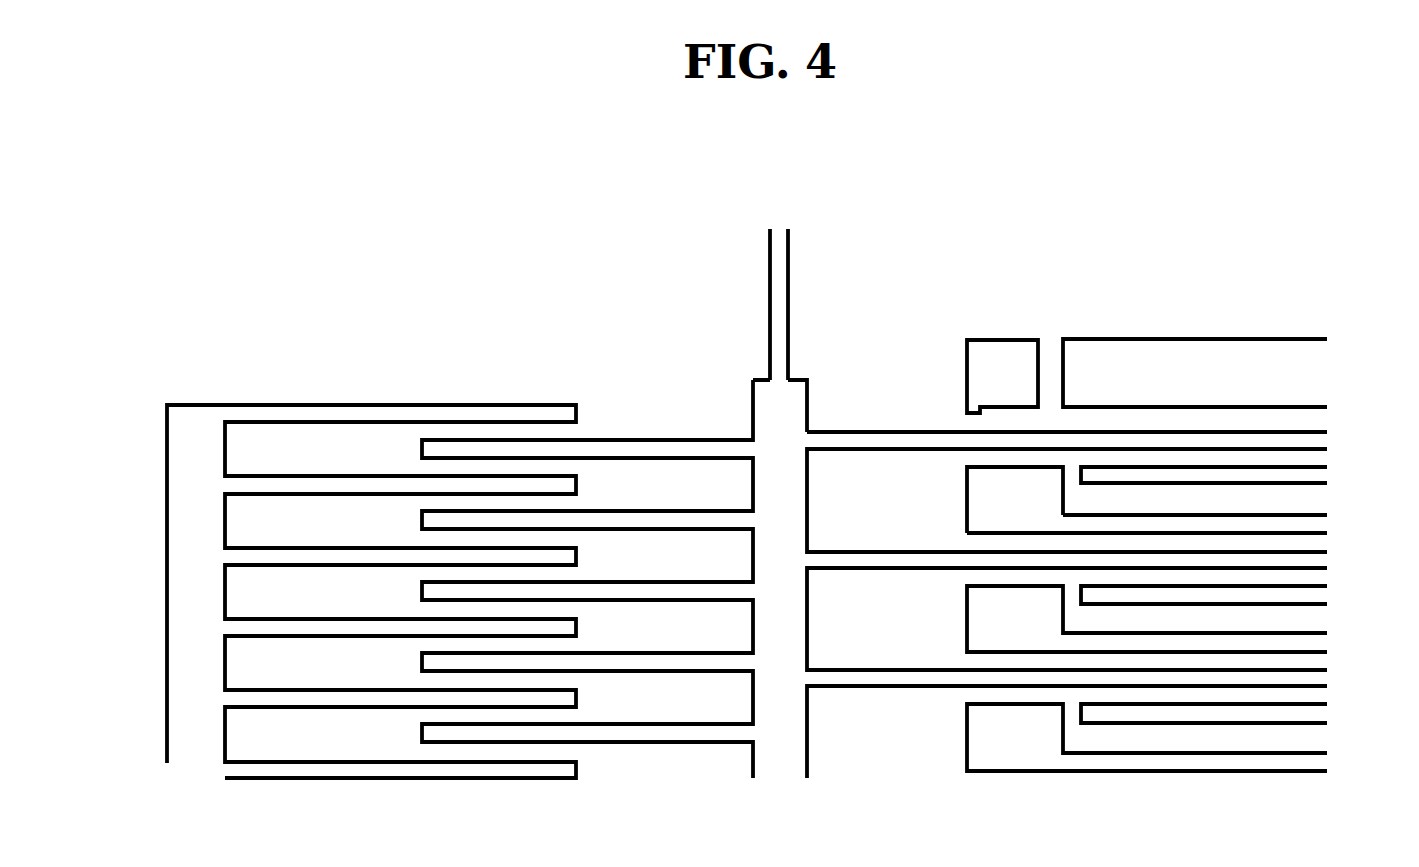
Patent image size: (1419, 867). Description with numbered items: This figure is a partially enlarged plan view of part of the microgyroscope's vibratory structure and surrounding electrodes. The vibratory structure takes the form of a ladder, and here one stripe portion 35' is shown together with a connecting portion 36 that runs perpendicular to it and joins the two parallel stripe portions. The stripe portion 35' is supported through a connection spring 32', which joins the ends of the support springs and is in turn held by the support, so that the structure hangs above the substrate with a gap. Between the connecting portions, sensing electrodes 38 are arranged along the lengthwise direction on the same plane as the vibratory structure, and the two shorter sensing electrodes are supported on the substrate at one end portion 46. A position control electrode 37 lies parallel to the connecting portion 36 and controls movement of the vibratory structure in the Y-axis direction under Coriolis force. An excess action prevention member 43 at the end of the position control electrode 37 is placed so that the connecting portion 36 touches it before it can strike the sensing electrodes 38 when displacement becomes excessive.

The connection spring 32' is at (822, 304).
The stripe portion 35' is at (724, 364).
The connecting portion 36 is at (848, 437).
The position control electrode 37 is at (1108, 348).
The sensing electrode 38 is at (1237, 470).
The excess action prevention member 43 is at (973, 350).
The one end portion 46 is at (978, 497).